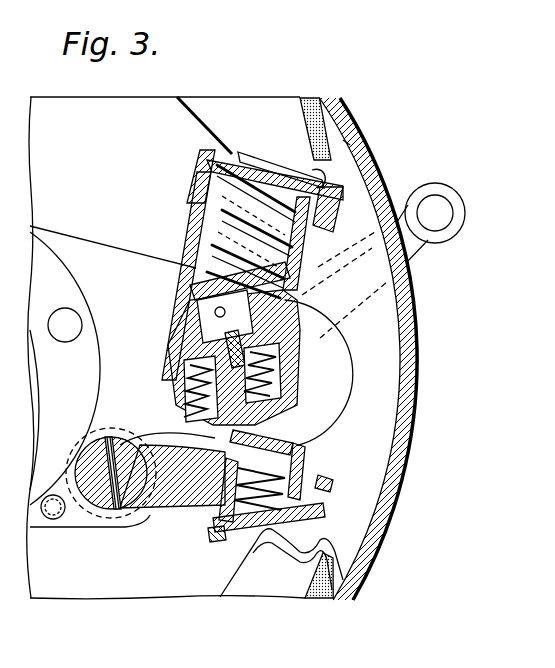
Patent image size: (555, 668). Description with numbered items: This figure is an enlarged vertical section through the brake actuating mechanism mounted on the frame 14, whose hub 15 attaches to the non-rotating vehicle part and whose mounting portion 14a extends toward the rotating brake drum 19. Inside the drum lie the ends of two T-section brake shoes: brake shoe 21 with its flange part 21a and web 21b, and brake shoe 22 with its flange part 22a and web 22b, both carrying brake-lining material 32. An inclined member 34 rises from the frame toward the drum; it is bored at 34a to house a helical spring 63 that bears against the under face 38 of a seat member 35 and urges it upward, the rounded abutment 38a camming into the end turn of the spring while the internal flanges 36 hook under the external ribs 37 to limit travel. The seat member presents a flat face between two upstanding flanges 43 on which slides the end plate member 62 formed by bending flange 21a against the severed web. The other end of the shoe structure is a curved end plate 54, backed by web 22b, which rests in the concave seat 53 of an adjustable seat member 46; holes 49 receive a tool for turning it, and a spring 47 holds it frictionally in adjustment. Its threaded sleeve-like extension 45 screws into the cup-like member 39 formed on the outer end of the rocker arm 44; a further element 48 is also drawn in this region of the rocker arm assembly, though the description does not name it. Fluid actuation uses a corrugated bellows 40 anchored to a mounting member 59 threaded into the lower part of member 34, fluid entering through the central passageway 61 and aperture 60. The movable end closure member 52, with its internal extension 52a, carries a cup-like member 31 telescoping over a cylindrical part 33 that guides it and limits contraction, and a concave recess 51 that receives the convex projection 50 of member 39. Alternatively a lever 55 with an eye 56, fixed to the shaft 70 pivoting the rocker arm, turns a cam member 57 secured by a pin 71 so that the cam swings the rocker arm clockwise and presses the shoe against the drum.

The frame 14 is at (104, 244).
The mounting portion 14a is at (346, 374).
The hub 15 is at (88, 363).
The brake drum 19 is at (413, 337).
The brake shoe 21 is at (201, 113).
The flange part 21a is at (345, 142).
The web 21b is at (214, 105).
The brake shoe 22 is at (219, 586).
The flange part 22a is at (307, 600).
The web 22b is at (243, 592).
The cup-like member 31 is at (178, 378).
The brake-lining material 32 is at (330, 131).
The cylindrical part 33 is at (195, 398).
The member 34 is at (322, 272).
The bore 34a is at (200, 256).
The seat member 35 is at (343, 192).
The internal flanges 36 is at (190, 204).
The external ribs 37 is at (197, 178).
The under face 38 is at (214, 151).
The rounded abutment 38a is at (328, 172).
The cup-like member 39 is at (300, 462).
The bellows 40 is at (293, 360).
The upstanding flanges 43 is at (263, 152).
The rocker arm 44 is at (167, 503).
The sleeve-like extension 45 is at (300, 470).
The seat member 46 is at (323, 510).
The spring 47 is at (213, 513).
The spring 48 is at (298, 443).
The holes 49 is at (326, 516).
The convex projection 50 is at (222, 440).
The concave recess 51 is at (290, 420).
The end closure member 52 is at (297, 397).
The internal extension 52a is at (280, 347).
The concave seat 53 is at (333, 483).
The curved end plate 54 is at (273, 533).
The lever 55 is at (160, 430).
The eye 56 is at (450, 213).
The cam member 57 is at (205, 428).
The mounting member 59 is at (190, 344).
The aperture 60 is at (200, 305).
The central passageway 61 is at (198, 330).
The end plate member 62 is at (330, 168).
The helical spring 63 is at (202, 236).
The shaft 70 is at (100, 493).
The pin 71 is at (118, 510).